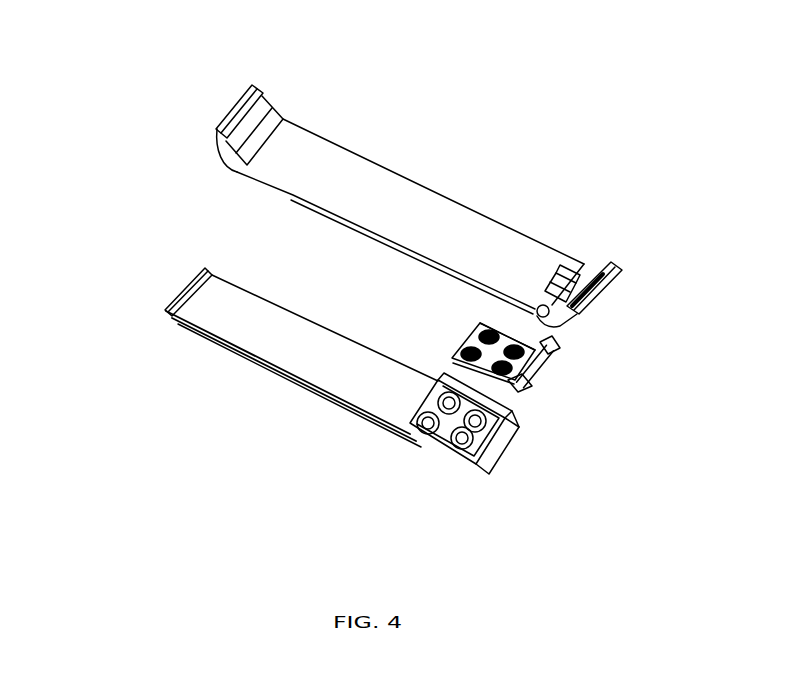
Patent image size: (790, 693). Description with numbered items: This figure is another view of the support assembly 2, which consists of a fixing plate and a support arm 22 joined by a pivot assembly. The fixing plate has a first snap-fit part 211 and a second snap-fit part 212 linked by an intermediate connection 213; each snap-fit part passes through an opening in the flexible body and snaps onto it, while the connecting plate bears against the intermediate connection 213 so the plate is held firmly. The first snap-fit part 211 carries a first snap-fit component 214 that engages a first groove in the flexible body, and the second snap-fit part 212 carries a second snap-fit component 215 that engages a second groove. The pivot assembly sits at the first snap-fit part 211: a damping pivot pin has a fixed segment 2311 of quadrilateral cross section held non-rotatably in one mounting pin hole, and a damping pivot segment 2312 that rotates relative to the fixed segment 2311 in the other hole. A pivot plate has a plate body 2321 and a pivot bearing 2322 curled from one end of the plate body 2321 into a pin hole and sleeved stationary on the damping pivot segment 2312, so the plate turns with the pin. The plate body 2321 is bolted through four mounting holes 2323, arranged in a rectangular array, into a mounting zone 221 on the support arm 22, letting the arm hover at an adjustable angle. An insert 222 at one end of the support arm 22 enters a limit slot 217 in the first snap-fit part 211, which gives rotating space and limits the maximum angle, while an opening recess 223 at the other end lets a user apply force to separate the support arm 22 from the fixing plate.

The support assembly 2 is at (472, 23).
The second snap-fit part 212 is at (375, 244).
The intermediate connection 213 is at (412, 207).
The second snap-fit component 215 is at (228, 106).
The limit slot 217 is at (581, 270).
The first snap-fit component 214 is at (620, 283).
The first snap-fit part 211 is at (624, 331).
The support arm 22 is at (306, 421).
The opening recess 223 is at (170, 283).
The mounting zone 221 is at (408, 435).
The insert 222 is at (513, 466).
The plate body 2321 is at (466, 334).
The mounting holes 2323 is at (498, 319).
The pivot bearing 2322 is at (540, 371).
The fixed segment 2311 is at (553, 349).
The damping pivot segment 2312 is at (533, 388).